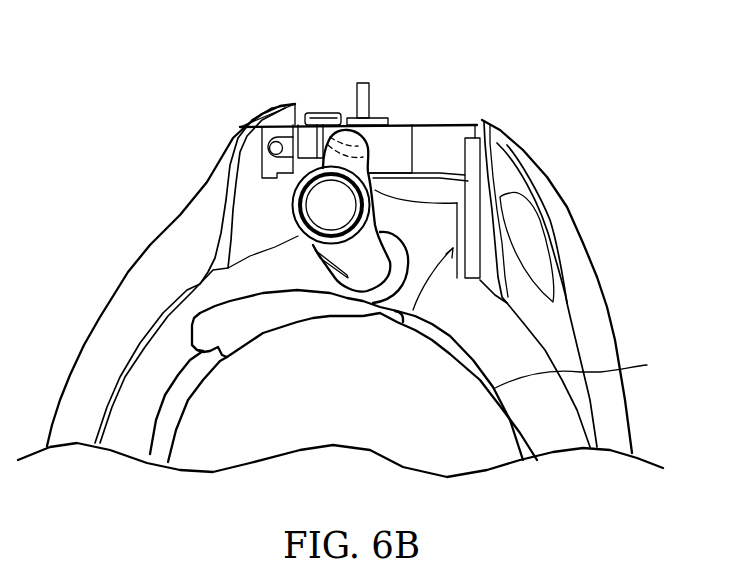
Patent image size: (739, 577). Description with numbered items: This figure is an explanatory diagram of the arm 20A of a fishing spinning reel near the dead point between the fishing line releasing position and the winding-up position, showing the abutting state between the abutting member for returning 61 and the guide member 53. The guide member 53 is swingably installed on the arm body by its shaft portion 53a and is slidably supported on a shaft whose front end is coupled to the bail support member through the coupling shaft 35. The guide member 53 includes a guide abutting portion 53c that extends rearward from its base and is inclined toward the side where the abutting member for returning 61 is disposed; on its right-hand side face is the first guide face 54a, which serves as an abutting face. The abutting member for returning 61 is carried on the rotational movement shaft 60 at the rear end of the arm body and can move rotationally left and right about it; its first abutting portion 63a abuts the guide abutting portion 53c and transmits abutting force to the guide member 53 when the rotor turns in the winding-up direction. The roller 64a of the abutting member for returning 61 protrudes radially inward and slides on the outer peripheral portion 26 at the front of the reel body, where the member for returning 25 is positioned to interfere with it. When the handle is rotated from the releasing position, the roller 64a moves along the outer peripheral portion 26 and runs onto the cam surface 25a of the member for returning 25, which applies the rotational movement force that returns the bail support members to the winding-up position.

The arm 20A is at (180, 218).
The member for returning 25 is at (263, 318).
The cam surface 25a is at (305, 287).
The outer peripheral portion 26 is at (592, 367).
The coupling shaft 35 is at (370, 98).
The guide member 53 is at (295, 108).
The shaft portion 53a is at (325, 113).
The guide abutting portion 53c is at (246, 95).
The first guide face 54a is at (298, 147).
The rotational movement shaft 60 is at (320, 210).
The abutting member for returning 61 is at (385, 206).
The first abutting portion 63a is at (268, 152).
The roller 64a is at (398, 252).